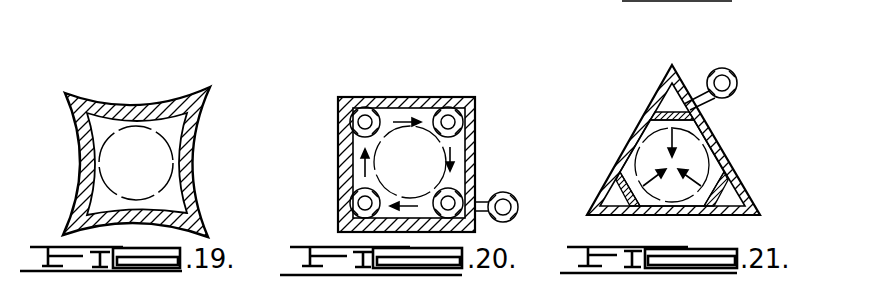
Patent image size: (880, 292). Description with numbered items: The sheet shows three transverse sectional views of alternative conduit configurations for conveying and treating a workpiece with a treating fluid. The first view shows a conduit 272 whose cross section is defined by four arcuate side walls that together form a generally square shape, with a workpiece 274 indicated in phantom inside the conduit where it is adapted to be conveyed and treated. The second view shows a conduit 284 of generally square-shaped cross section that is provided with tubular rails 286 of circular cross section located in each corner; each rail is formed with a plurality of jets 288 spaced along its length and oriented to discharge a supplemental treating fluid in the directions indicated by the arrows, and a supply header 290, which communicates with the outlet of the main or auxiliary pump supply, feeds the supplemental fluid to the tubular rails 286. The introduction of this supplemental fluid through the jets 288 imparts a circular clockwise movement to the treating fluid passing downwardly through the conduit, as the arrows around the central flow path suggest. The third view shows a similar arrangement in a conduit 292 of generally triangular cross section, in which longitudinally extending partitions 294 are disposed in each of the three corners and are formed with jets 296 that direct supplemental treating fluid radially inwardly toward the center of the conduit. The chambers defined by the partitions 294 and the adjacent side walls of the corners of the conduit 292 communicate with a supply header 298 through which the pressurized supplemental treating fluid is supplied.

In FIG. 19, the conduit 272 is at (183, 118).
In FIG. 19, the workpiece 274 is at (157, 190).
In FIG. 20, the conduit 284 is at (477, 147).
In FIG. 20, the tubular rails 286 is at (368, 98).
In FIG. 20, the jets 288 is at (392, 100).
In FIG. 20, the supply header 290 is at (520, 174).
In FIG. 21, the conduit 292 is at (712, 130).
In FIG. 21, the partitions 294 is at (662, 112).
In FIG. 21, the jets 296 is at (697, 116).
In FIG. 21, the supply header 298 is at (733, 73).